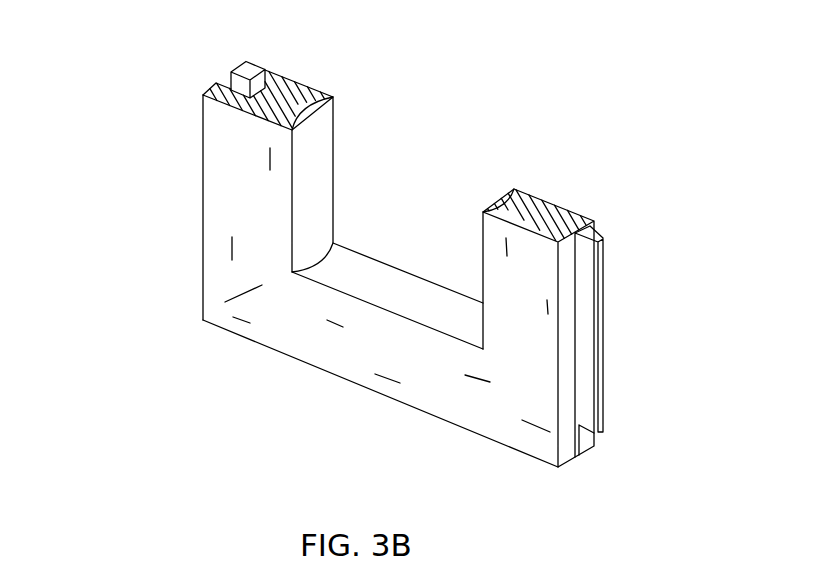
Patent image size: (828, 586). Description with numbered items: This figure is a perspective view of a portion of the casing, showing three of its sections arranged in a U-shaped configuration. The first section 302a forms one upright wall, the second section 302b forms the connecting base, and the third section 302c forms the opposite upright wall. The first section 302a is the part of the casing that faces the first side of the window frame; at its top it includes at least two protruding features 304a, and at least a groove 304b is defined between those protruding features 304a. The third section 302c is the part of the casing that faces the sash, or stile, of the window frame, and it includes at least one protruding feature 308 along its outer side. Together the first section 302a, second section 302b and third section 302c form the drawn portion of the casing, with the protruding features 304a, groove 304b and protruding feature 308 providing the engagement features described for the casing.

The first section 302a is at (186, 207).
The second section 302b is at (380, 364).
The third section 302c is at (592, 328).
The protruding features 304a is at (221, 81).
The groove 304b is at (266, 52).
The protruding feature 308 is at (632, 341).